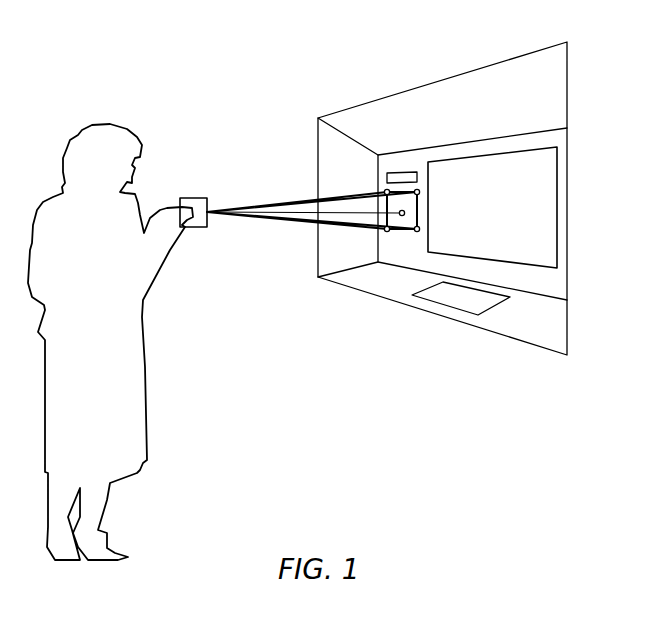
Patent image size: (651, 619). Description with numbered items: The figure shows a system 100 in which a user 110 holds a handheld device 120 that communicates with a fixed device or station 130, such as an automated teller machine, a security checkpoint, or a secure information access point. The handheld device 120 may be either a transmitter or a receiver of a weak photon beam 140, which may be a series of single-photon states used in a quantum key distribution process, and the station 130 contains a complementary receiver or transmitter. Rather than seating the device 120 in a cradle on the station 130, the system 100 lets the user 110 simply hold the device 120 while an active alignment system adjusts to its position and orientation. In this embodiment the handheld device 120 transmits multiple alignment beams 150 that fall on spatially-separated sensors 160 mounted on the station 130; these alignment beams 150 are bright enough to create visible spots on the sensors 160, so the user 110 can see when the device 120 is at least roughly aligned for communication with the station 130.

The system 100 is at (224, 46).
The user 110 is at (108, 293).
The handheld device 120 is at (193, 198).
The fixed device or station 130 is at (535, 249).
The weak photon beam 140 is at (290, 212).
The alignment beams 150 is at (308, 200).
The sensors 160 is at (385, 192).